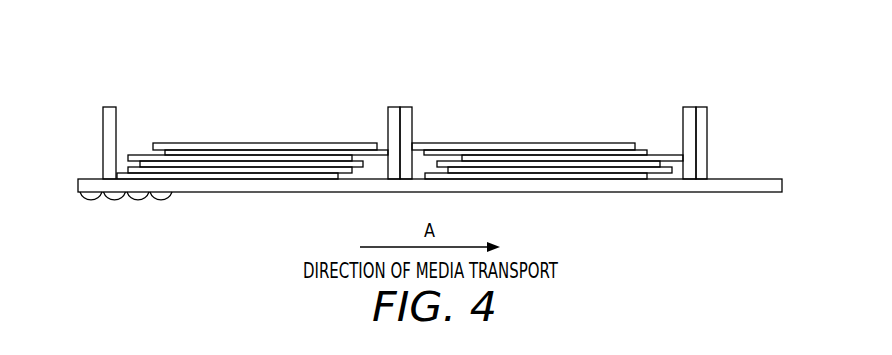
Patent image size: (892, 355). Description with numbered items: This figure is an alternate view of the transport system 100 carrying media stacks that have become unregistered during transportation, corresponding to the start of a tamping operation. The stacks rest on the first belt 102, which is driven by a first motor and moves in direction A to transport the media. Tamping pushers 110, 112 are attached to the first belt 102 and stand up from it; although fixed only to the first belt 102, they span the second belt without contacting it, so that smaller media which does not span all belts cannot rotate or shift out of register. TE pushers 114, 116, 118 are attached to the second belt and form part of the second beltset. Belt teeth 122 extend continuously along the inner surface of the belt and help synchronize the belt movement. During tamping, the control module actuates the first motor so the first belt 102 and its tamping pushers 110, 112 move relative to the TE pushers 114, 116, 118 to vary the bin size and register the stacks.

The transport system 100 is at (583, 38).
The first belt 102 is at (463, 192).
The tamping pusher 110 is at (393, 106).
The tamping pusher 112 is at (690, 106).
The TE pusher 114 is at (110, 106).
The TE pusher 116 is at (406, 106).
The TE pusher 118 is at (701, 106).
The belt teeth 122 is at (114, 200).